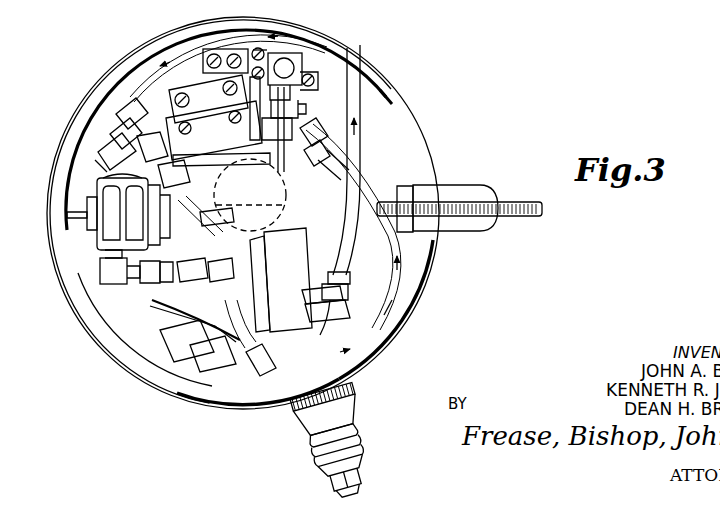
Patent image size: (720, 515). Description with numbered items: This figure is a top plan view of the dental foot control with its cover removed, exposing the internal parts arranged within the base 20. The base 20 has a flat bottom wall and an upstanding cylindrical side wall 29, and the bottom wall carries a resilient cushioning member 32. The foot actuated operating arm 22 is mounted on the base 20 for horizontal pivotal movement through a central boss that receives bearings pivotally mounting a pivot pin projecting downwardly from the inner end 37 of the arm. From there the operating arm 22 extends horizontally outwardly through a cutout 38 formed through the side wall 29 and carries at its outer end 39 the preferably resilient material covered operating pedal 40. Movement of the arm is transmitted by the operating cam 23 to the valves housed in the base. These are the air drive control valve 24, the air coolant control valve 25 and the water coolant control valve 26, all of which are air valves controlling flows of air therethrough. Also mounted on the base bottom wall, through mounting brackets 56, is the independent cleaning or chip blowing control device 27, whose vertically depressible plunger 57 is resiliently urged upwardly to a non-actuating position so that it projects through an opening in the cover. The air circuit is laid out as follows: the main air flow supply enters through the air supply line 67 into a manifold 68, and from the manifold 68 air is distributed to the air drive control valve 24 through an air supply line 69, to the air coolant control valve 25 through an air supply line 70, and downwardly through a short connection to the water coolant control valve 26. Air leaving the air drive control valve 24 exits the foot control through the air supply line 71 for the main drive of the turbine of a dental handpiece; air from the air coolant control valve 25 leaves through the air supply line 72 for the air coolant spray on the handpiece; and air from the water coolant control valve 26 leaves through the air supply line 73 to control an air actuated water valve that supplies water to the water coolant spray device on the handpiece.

The base 20 is at (84, 334).
The foot actuated operating arm 22 is at (402, 182).
The operating cam 23 is at (298, 201).
The air drive control valve 24 is at (96, 240).
The air coolant control valve 25 is at (201, 105).
The water coolant control valve 26 is at (200, 366).
The chip blowing control device 27 is at (304, 62).
The cylindrical side wall 29 is at (64, 153).
The cushioning member 32 is at (419, 4).
The inner end 37 is at (296, 192).
The cutout 38 is at (392, 98).
The outer end 39 is at (408, 240).
The operating pedal 40 is at (487, 186).
The mounting brackets 56 is at (221, 55).
The plunger 57 is at (287, 62).
The air supply line 67 is at (222, 366).
The manifold 68 is at (292, 291).
The air supply line 69 is at (146, 78).
The air supply line 70 is at (393, 301).
The air supply line 71 is at (158, 380).
The air supply line 72 is at (214, 237).
The air supply line 73 is at (270, 364).